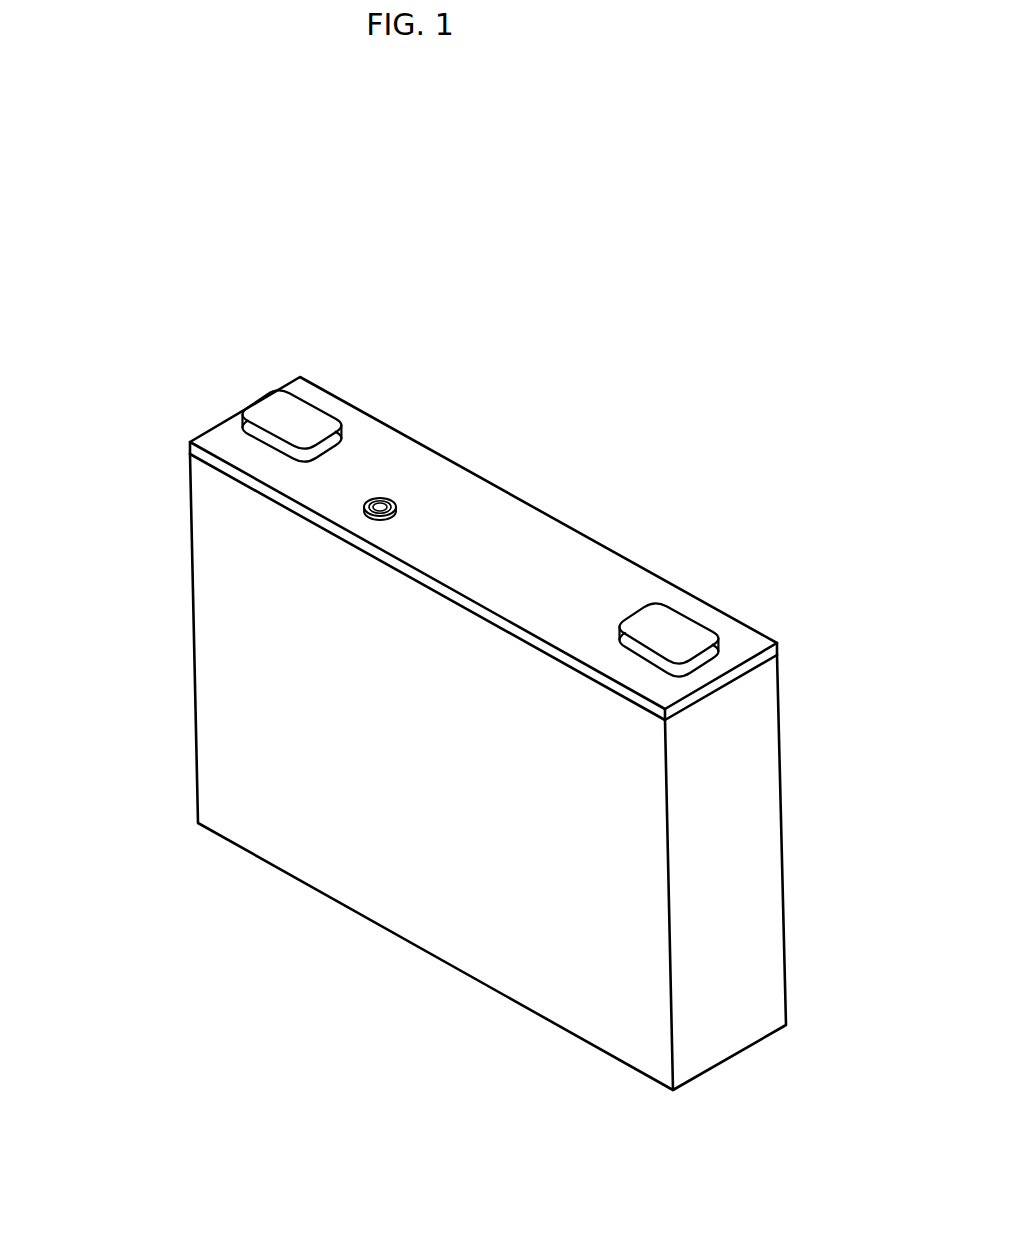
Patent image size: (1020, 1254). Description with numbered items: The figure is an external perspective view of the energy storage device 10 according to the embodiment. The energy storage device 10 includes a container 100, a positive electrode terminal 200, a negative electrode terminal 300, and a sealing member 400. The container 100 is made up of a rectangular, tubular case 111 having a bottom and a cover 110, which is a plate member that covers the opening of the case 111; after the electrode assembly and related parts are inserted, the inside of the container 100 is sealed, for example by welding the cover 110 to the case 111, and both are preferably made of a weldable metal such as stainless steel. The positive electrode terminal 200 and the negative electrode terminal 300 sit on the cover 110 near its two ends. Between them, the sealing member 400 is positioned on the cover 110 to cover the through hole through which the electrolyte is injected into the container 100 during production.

The energy storage device 10 is at (603, 390).
The container 100 is at (110, 573).
The cover 110 is at (330, 503).
The case 111 is at (240, 653).
The positive electrode terminal 200 is at (293, 420).
The negative electrode terminal 300 is at (667, 630).
The sealing member 400 is at (390, 495).